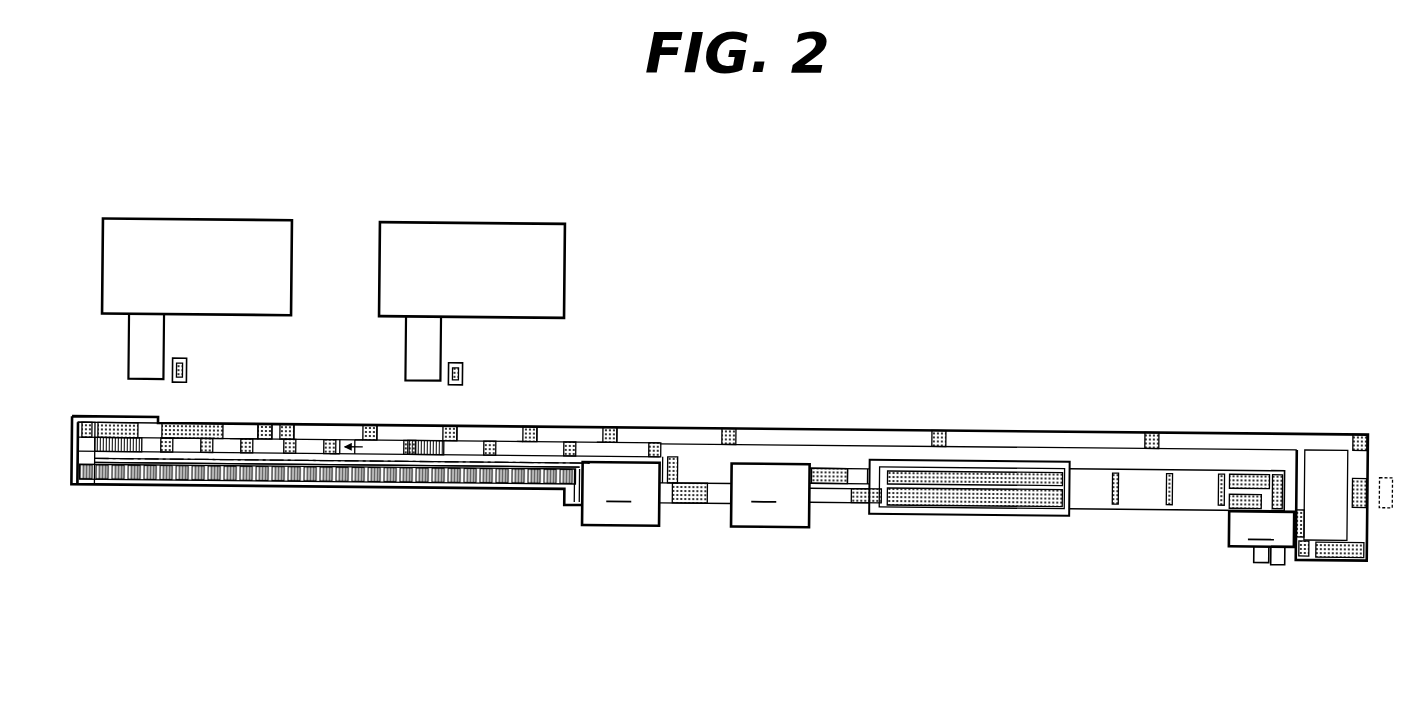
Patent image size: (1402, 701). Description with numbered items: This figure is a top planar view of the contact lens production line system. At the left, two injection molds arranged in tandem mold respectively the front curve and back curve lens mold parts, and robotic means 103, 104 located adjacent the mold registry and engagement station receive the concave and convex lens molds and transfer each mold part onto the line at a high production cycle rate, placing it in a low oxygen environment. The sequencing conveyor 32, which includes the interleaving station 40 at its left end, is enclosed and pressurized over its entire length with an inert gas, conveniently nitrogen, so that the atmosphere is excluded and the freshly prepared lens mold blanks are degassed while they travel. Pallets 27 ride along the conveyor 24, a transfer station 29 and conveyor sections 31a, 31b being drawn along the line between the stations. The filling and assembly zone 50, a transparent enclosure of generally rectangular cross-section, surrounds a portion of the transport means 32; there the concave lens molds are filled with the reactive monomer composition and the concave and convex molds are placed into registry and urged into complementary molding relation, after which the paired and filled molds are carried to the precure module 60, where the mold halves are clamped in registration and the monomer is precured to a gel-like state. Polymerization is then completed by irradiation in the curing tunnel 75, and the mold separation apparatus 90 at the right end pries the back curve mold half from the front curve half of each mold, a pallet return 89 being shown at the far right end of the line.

The robotic means 103 is at (140, 359).
The robotic means 104 is at (413, 347).
The pallet 27 is at (206, 424).
The conveyor 24 is at (240, 487).
The transfer station 29 is at (468, 441).
The conveyor section 31a is at (858, 456).
The conveyor section 31b is at (866, 498).
The interleaving station 40 is at (66, 450).
The sequencing conveyor 32 is at (393, 486).
The filling and assembly zone 50 is at (600, 576).
The precure module 60 is at (770, 584).
The curing tunnel 75 is at (965, 509).
The mold separation apparatus 90 is at (1228, 530).
The pallet return 89 is at (1388, 460).